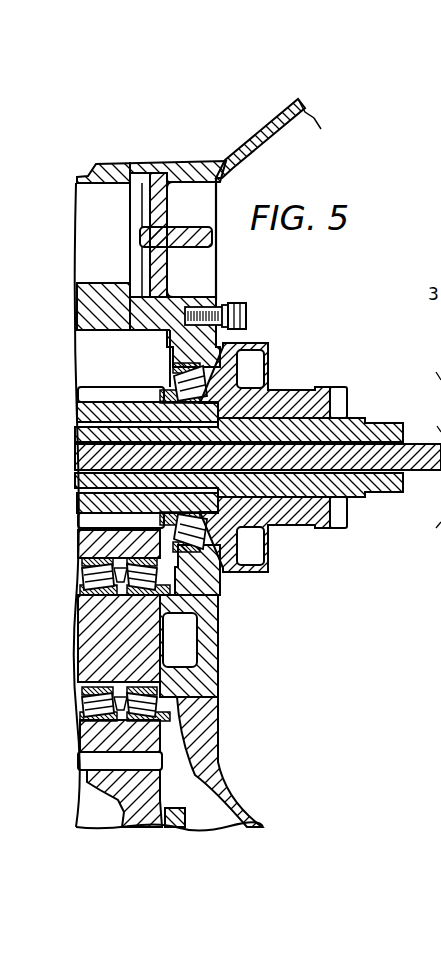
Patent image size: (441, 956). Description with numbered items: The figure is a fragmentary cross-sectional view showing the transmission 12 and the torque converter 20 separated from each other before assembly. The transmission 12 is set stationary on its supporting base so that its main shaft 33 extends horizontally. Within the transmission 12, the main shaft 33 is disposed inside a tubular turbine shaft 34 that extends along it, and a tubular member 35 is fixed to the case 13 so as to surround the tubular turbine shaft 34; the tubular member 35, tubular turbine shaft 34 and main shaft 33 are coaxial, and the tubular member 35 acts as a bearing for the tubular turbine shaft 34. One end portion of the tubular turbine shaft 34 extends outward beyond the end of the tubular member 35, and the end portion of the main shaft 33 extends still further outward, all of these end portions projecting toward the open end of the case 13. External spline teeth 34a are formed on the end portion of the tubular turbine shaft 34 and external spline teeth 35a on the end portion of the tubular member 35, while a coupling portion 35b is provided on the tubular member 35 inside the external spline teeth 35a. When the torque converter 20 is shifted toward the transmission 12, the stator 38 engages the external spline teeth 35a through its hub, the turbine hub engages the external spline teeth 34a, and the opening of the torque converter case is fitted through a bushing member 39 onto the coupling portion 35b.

The transmission 12 is at (134, 146).
The case 13 is at (262, 125).
The torque converter 20 is at (427, 366).
The main shaft 33 is at (376, 468).
The tubular turbine shaft 34 is at (350, 430).
The external spline teeth 34a is at (389, 420).
The tubular member 35 is at (299, 400).
The external spline teeth 35a is at (333, 388).
The coupling portion 35b is at (266, 384).
The stator 38 is at (430, 409).
The bushing member 39 is at (432, 535).